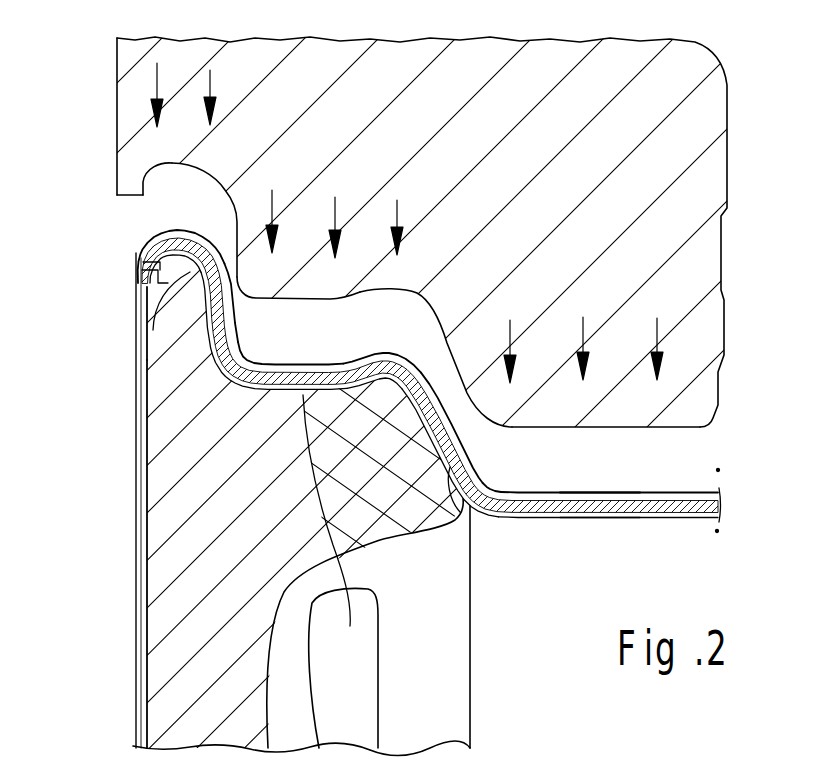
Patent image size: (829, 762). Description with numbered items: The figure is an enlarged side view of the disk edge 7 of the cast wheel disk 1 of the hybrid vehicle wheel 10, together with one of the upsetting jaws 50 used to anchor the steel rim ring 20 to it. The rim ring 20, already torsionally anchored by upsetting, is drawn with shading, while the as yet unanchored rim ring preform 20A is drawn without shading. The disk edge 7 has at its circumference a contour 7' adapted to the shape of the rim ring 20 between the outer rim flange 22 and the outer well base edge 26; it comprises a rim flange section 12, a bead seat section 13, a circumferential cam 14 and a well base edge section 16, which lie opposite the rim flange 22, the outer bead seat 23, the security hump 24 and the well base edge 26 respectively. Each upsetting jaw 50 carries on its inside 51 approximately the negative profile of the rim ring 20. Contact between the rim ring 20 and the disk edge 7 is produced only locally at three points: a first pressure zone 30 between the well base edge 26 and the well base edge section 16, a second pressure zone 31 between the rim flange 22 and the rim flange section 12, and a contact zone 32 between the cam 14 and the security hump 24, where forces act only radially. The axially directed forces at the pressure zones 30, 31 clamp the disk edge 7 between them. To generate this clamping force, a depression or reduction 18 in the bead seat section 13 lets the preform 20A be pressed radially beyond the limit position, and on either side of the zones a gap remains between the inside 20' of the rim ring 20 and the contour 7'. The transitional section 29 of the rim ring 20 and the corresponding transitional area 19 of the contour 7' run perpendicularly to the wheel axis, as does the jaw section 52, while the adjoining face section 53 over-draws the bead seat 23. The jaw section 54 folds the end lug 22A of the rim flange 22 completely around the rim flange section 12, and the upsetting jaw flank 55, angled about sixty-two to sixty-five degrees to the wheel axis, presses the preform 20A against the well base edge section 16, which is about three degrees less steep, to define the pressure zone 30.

The wheel disk 1 is at (175, 675).
The disk edge 7 is at (132, 554).
The contour 7' is at (343, 668).
The vehicle wheel 10 is at (85, 558).
The rim flange section 12 is at (157, 327).
The bead seat section 13 is at (178, 470).
The circumferential cam 14 is at (427, 435).
The well base edge section 16 is at (472, 532).
The depression or reduction 18 is at (387, 395).
The transitional area 19 is at (165, 343).
The rim ring 20 is at (610, 523).
The rim ring preform 20A is at (598, 500).
The inside of the rim ring 20' is at (600, 556).
The outer rim flange 22 is at (177, 232).
The end lug 22A is at (143, 259).
The outer bead seat 23 is at (297, 382).
The security hump 24 is at (400, 358).
The outer well base edge 26 is at (453, 450).
The transitional section 29 is at (235, 308).
The first pressure zone 30 is at (473, 523).
The second pressure zone 31 is at (155, 284).
The contact zone 32 is at (373, 362).
The upsetting jaw 50 is at (700, 174).
The inside of the upsetting jaw 51 is at (672, 432).
The jaw section 52 is at (240, 233).
The face section 53 is at (318, 296).
The upsetting jaw section 54 is at (140, 183).
The upsetting jaw flank 55 is at (470, 345).